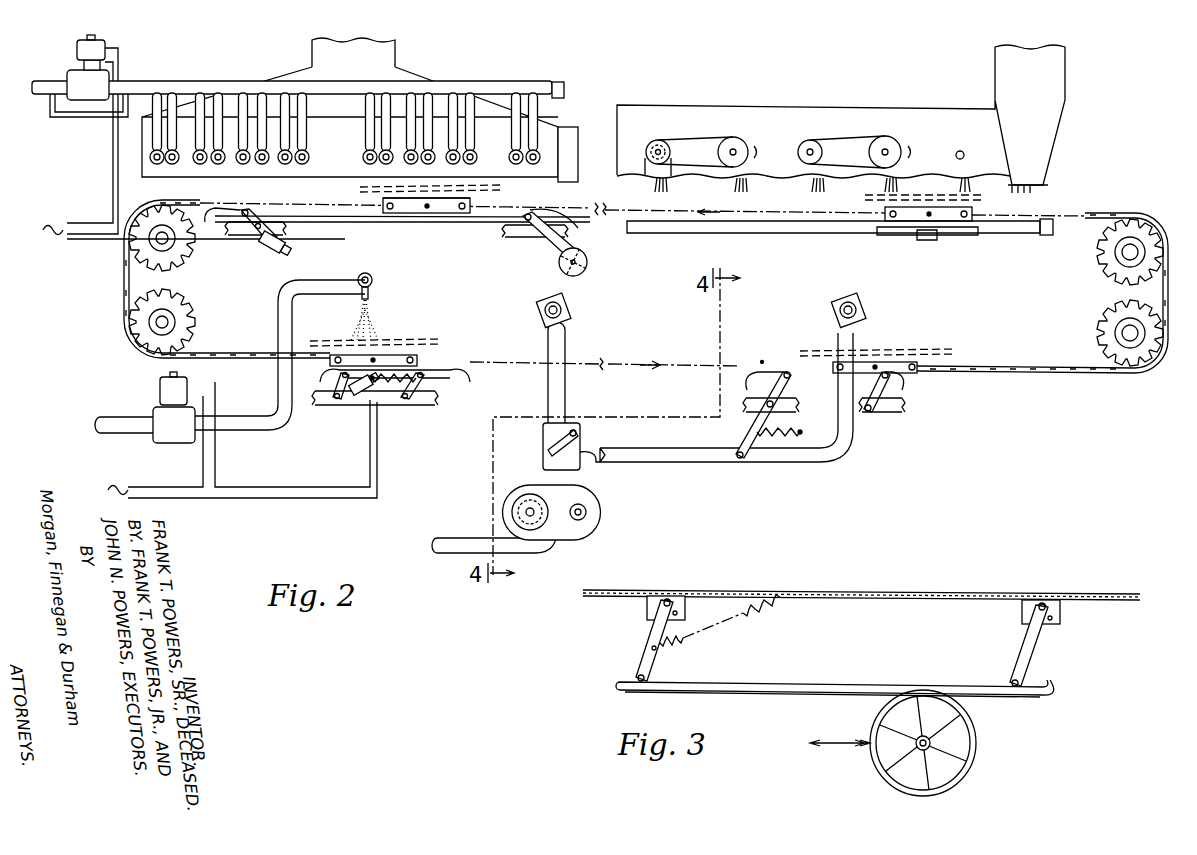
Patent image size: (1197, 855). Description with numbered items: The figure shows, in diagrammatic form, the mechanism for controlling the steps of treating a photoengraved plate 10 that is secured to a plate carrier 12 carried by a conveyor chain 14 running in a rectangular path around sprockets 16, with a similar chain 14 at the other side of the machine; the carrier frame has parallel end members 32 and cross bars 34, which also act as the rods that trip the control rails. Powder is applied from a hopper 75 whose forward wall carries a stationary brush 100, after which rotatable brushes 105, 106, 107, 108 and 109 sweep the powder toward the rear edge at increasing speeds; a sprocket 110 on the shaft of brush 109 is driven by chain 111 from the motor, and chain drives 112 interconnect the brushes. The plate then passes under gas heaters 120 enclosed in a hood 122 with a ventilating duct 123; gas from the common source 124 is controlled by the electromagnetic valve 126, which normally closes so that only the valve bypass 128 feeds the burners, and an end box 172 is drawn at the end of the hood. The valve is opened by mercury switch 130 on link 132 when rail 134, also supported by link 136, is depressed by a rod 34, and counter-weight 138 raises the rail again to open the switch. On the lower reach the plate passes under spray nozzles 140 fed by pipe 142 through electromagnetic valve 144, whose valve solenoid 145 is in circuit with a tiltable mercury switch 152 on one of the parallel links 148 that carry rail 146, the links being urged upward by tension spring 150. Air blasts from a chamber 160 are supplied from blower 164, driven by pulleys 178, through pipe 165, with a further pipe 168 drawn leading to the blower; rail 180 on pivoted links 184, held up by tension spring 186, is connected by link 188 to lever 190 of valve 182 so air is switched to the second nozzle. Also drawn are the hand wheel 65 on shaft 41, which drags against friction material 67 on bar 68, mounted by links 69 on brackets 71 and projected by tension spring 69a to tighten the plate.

In FIG. 2, the photoengraved plate 10 is at (360, 188).
In FIG. 2, the plate carrier 12 is at (470, 200).
In FIG. 2, the conveyor chain 14 is at (672, 223).
In FIG. 3, the conveyor chain 14 is at (861, 595).
In FIG. 2, the sprocket 16 is at (192, 262).
In FIG. 2, the end member 32 is at (430, 214).
In FIG. 2, the cross bar 34 is at (390, 212).
In FIG. 3, the shaft 41 is at (930, 748).
In FIG. 2, the hand wheel 65 is at (962, 240).
In FIG. 3, the hand wheel 65 is at (968, 728).
In FIG. 2, the strip of friction material 67 is at (830, 233).
In FIG. 3, the strip of friction material 67 is at (785, 696).
In FIG. 3, the bar 68 is at (856, 682).
In FIG. 3, the link 69 is at (652, 632).
In FIG. 3, the tension spring 69a is at (678, 640).
In FIG. 3, the bracket 71 is at (647, 608).
In FIG. 2, the hopper 75 is at (1052, 102).
In FIG. 2, the stationary brush 100 is at (1035, 190).
In FIG. 2, the rotatable brush 105 is at (953, 175).
In FIG. 2, the rotatable brush 106 is at (884, 186).
In FIG. 2, the rotatable brush 107 is at (809, 186).
In FIG. 2, the rotatable brush 108 is at (734, 186).
In FIG. 2, the rotatable brush 109 is at (660, 140).
In FIG. 2, the sprocket 110 is at (630, 152).
In FIG. 2, the chain 111 is at (630, 172).
In FIG. 2, the chain drive 112 is at (690, 135).
In FIG. 2, the gas heater 120 is at (355, 160).
In FIG. 2, the hood 122 is at (402, 77).
In FIG. 2, the ventilating duct 123 is at (388, 50).
In FIG. 2, the common source 124 is at (232, 92).
In FIG. 2, the electromagnetic valve 126 is at (80, 82).
In FIG. 2, the valve bypass 128 is at (80, 116).
In FIG. 2, the mercury switch 130 is at (268, 250).
In FIG. 2, the link 132 is at (283, 238).
In FIG. 2, the rail 134 is at (350, 218).
In FIG. 2, the link 136 is at (556, 252).
In FIG. 2, the counter-weight 138 is at (559, 264).
In FIG. 2, the spray nozzle 140 is at (376, 292).
In FIG. 2, the pipe 142 is at (278, 333).
In FIG. 2, the electromagnetic valve 144 is at (165, 418).
In FIG. 2, the valve solenoid 145 is at (168, 382).
In FIG. 2, the rail 146 is at (435, 372).
In FIG. 2, the parallel link 148 is at (428, 386).
In FIG. 2, the tension spring 150 is at (392, 400).
In FIG. 2, the tiltable mercury switch 152 is at (355, 400).
In FIG. 2, the chamber 160 is at (572, 312).
In FIG. 2, the blower 164 is at (582, 532).
In FIG. 2, the pipe 165 is at (566, 392).
In FIG. 2, the pipe 168 is at (464, 536).
In FIG. 2, the end box 172 is at (572, 127).
In FIG. 2, the pulley 178 is at (524, 496).
In FIG. 2, the rail 180 is at (762, 365).
In FIG. 2, the valve 182 is at (585, 440).
In FIG. 2, the pivoted link 184 is at (748, 430).
In FIG. 2, the tension spring 186 is at (770, 440).
In FIG. 2, the link 188 is at (660, 462).
In FIG. 2, the lever 190 is at (546, 440).